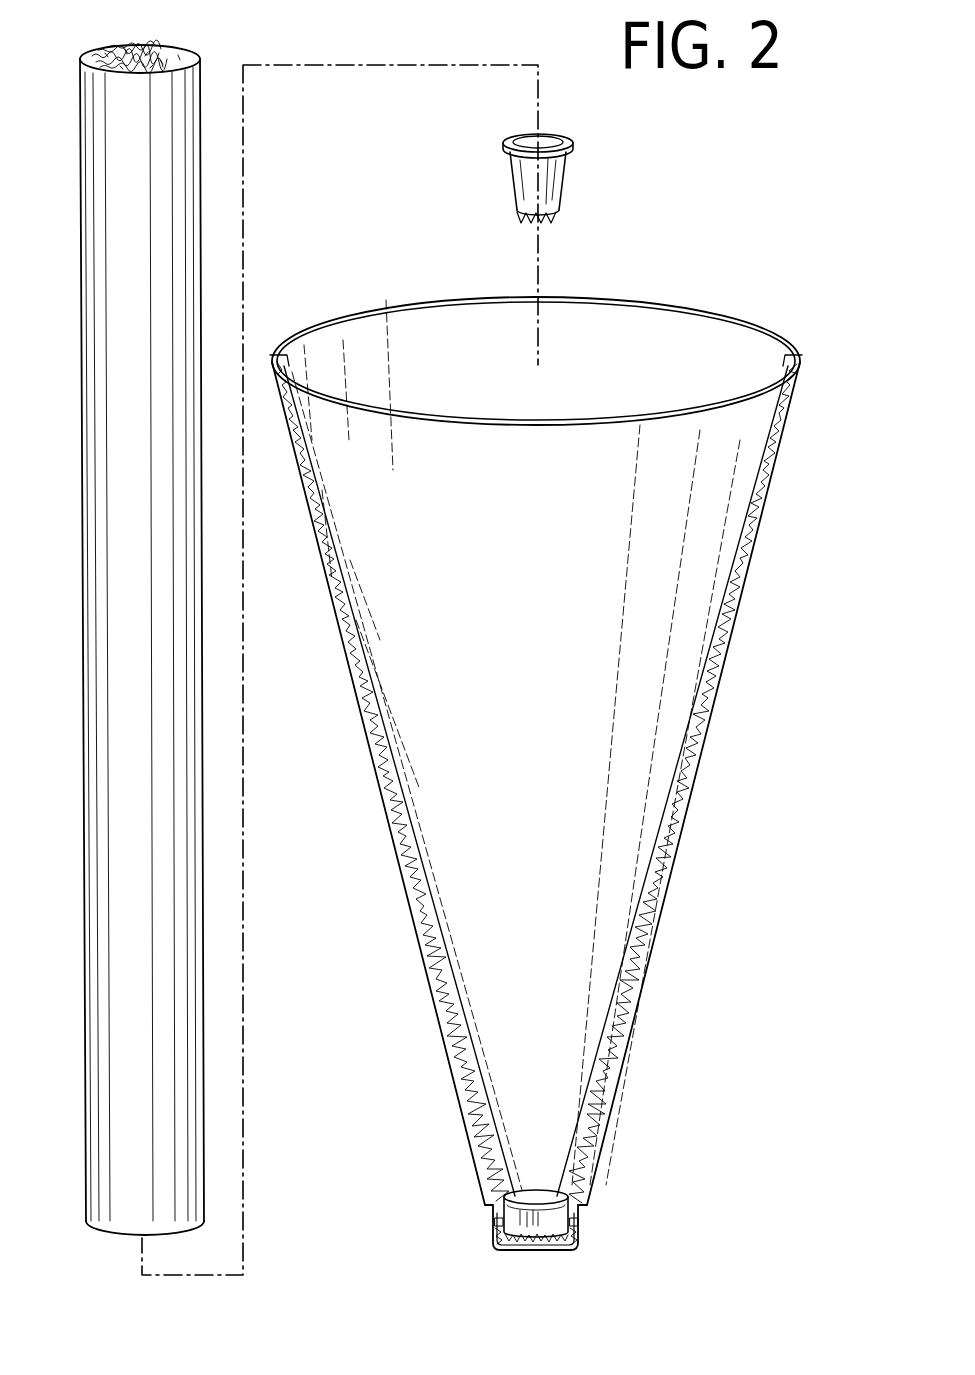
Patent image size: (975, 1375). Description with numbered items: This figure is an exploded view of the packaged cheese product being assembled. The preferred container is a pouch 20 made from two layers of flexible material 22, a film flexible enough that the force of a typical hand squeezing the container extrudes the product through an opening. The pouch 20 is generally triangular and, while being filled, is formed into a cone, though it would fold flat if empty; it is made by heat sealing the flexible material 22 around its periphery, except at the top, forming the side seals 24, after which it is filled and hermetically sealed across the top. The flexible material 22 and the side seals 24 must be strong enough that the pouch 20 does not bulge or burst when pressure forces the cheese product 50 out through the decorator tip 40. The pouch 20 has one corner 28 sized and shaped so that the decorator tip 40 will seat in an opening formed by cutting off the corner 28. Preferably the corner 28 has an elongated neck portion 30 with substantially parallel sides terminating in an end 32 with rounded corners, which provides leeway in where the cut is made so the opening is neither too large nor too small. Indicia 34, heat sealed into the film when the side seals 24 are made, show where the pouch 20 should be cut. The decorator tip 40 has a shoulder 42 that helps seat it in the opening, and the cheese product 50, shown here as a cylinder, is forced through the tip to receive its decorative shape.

The pouch 20 is at (554, 777).
The flexible material 22 is at (548, 723).
The side seals 24 is at (397, 820).
The corner 28 is at (537, 1173).
The elongated neck portion 30 is at (553, 1213).
The end 32 is at (548, 1252).
The indicia 34 is at (580, 1222).
The decorator tip 40 is at (567, 156).
The shoulder 42 is at (568, 138).
The cheese product 50 is at (113, 826).